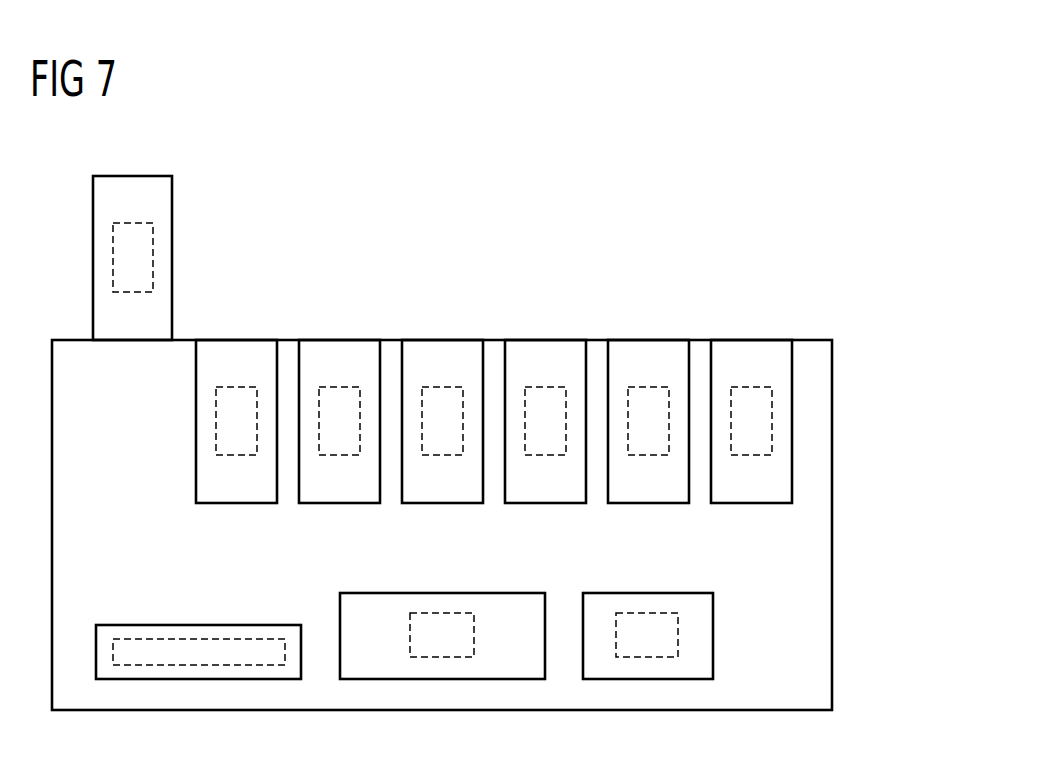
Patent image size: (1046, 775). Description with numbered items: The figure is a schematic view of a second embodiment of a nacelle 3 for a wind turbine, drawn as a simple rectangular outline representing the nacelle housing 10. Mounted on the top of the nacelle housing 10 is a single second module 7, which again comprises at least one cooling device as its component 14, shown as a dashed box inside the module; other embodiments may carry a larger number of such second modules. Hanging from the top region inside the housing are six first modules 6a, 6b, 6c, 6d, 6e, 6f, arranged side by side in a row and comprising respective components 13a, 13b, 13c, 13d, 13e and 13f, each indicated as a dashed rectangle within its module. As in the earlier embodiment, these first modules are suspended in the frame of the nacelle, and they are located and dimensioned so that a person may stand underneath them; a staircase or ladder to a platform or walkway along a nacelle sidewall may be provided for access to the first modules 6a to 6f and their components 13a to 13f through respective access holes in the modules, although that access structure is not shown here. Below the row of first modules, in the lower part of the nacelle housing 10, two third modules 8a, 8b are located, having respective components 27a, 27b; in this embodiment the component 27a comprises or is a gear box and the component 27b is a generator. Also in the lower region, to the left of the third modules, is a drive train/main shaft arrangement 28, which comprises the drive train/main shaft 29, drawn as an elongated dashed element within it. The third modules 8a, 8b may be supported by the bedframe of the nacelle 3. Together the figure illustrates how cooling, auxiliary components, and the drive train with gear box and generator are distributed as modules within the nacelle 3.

The nacelle 3 is at (690, 220).
The first module 6a is at (252, 355).
The first module 6b is at (356, 355).
The first module 6c is at (459, 355).
The first module 6d is at (563, 355).
The first module 6e is at (664, 355).
The first module 6f is at (767, 355).
The second module 7 is at (105, 196).
The third module 8a is at (507, 679).
The third module 8b is at (697, 679).
The nacelle housing 10 is at (833, 470).
The component 13a is at (236, 398).
The component 13b is at (339, 398).
The component 13c is at (442, 398).
The component 13d is at (545, 398).
The component 13e is at (648, 398).
The component 13f is at (751, 398).
The cooling device 14 is at (127, 254).
The gear box 27a is at (435, 642).
The generator 27b is at (639, 642).
The drive train/main shaft arrangement 28 is at (200, 679).
The drive train/main shaft 29 is at (147, 653).